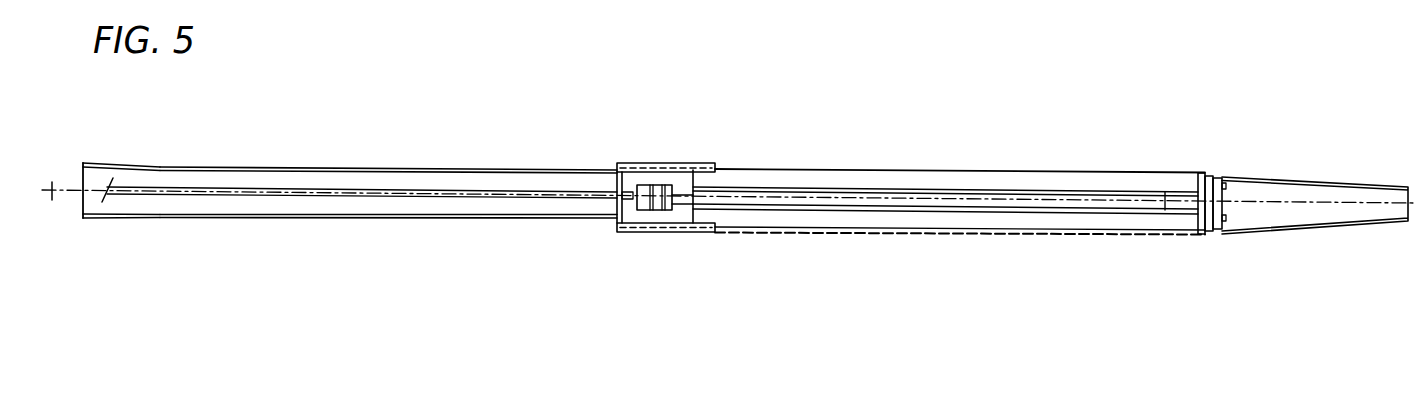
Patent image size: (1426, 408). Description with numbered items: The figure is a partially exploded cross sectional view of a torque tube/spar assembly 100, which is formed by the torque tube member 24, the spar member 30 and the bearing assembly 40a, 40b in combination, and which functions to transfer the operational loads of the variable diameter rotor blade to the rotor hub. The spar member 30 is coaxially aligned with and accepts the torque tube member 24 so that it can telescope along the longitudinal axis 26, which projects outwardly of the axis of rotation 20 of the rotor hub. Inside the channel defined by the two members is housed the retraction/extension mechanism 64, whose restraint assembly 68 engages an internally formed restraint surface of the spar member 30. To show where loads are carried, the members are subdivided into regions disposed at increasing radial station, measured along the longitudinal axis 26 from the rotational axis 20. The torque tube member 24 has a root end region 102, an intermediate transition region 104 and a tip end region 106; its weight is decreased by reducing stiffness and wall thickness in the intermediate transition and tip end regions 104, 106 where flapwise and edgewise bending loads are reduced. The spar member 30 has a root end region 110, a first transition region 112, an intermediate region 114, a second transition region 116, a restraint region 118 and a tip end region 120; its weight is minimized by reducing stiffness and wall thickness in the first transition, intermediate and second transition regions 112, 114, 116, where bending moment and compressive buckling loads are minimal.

The axis of rotation 20 is at (52, 192).
The torque tube member 24 is at (370, 216).
The longitudinal axis 26 is at (1278, 202).
The spar member 30 is at (927, 170).
The bearing assembly 40a is at (702, 170).
The bearing assembly 40b is at (617, 222).
The retraction/extension mechanism 64 is at (1022, 190).
The restraint assembly 68 is at (1226, 186).
The torque tube/spar assembly 100 is at (1190, 132).
The root end region 102 is at (160, 139).
The intermediate transition region 104 is at (617, 142).
The tip end region 106 is at (698, 142).
The root end region 110 is at (690, 249).
The first transition region 112 is at (772, 250).
The intermediate region 114 is at (1063, 251).
The second transition region 116 is at (1145, 252).
The restraint region 118 is at (1205, 253).
The tip end region 120 is at (1407, 253).